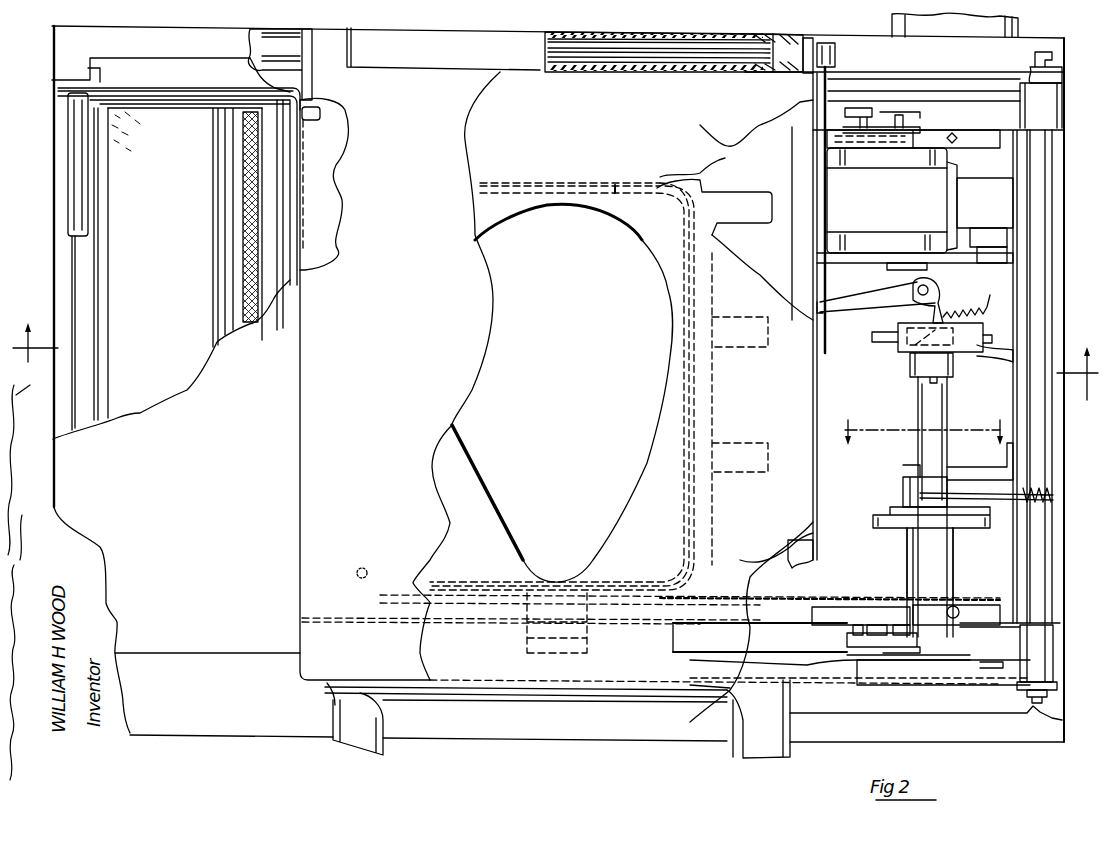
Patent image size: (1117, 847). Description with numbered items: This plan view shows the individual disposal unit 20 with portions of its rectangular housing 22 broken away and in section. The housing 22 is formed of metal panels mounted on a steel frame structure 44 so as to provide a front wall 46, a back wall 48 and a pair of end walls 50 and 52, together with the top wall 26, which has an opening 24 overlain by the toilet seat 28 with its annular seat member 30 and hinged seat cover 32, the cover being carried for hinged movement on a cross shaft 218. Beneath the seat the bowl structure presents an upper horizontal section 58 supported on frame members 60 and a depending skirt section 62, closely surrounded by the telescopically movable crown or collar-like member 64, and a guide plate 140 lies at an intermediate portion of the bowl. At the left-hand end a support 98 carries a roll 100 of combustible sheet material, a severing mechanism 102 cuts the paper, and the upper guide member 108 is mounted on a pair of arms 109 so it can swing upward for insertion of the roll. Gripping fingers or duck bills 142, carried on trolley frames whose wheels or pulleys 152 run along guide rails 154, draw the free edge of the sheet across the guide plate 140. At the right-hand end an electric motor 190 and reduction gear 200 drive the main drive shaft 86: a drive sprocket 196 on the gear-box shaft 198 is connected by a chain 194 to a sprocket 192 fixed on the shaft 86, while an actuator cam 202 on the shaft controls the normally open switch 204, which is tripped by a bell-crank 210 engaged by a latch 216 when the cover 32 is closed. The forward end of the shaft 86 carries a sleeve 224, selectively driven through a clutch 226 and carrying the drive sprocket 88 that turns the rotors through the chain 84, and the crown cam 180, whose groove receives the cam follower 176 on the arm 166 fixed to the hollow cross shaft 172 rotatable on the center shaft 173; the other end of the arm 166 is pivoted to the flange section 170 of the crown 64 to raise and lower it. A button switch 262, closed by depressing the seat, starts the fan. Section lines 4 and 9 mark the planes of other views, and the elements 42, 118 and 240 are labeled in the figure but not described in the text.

The individual disposal unit 20 is at (532, 13).
The rectangular housing 22 is at (338, 26).
The opening 24 is at (610, 537).
The top wall 26 is at (222, 430).
The toilet seat 28 is at (333, 481).
The annular seat member 30 is at (718, 133).
The seat cover 32 is at (410, 349).
The upper frame member 42 is at (1021, 32).
The steel frame structure 44 is at (842, 732).
The front wall 46 is at (1028, 745).
The back wall 48 is at (826, 35).
The end wall 50 is at (1067, 151).
The end wall 52 is at (47, 116).
The upper horizontal section 58 is at (758, 279).
The frame members 60 is at (803, 238).
The depending skirt section 62 is at (619, 190).
The crown 64 is at (566, 182).
The chain 84 is at (836, 598).
The main drive shaft 86 is at (929, 397).
The drive sprocket 88 is at (960, 604).
The support 98 is at (243, 166).
The roll 100 is at (190, 243).
The severing mechanism 102 is at (305, 153).
The upper guide member 108 is at (298, 196).
The arms 109 is at (182, 107).
The guide rail 118 is at (123, 95).
The guide plate 140 is at (748, 196).
The duck bills 142 is at (924, 121).
The wheels 152 is at (843, 628).
The guide rails 154 is at (700, 626).
The arms 166 is at (847, 72).
The flange section 170 is at (520, 624).
The hollow cross shaft 172 is at (1040, 575).
The center shaft 173 is at (1046, 693).
The cam follower 176 is at (928, 685).
The crown cam 180 is at (977, 662).
The electric motor 190 is at (908, 220).
The sprocket 192 is at (882, 263).
The chain 194 is at (982, 304).
The drive sprocket 196 is at (1007, 263).
The shaft 198 is at (1007, 248).
The reduction gear 200 is at (1010, 195).
The actuator cam 202 is at (885, 343).
The electrical switch 204 is at (962, 326).
The bell-crank 210 is at (866, 298).
The latch 216 is at (829, 198).
The cross shaft 218 is at (690, 50).
The sleeve portion 224 is at (950, 563).
The clutch 226 is at (873, 521).
The cable 240 is at (815, 92).
The button switch 262 is at (366, 569).
The section line 4- 4 is at (555, 370).
The section line 9- 9 is at (923, 423).